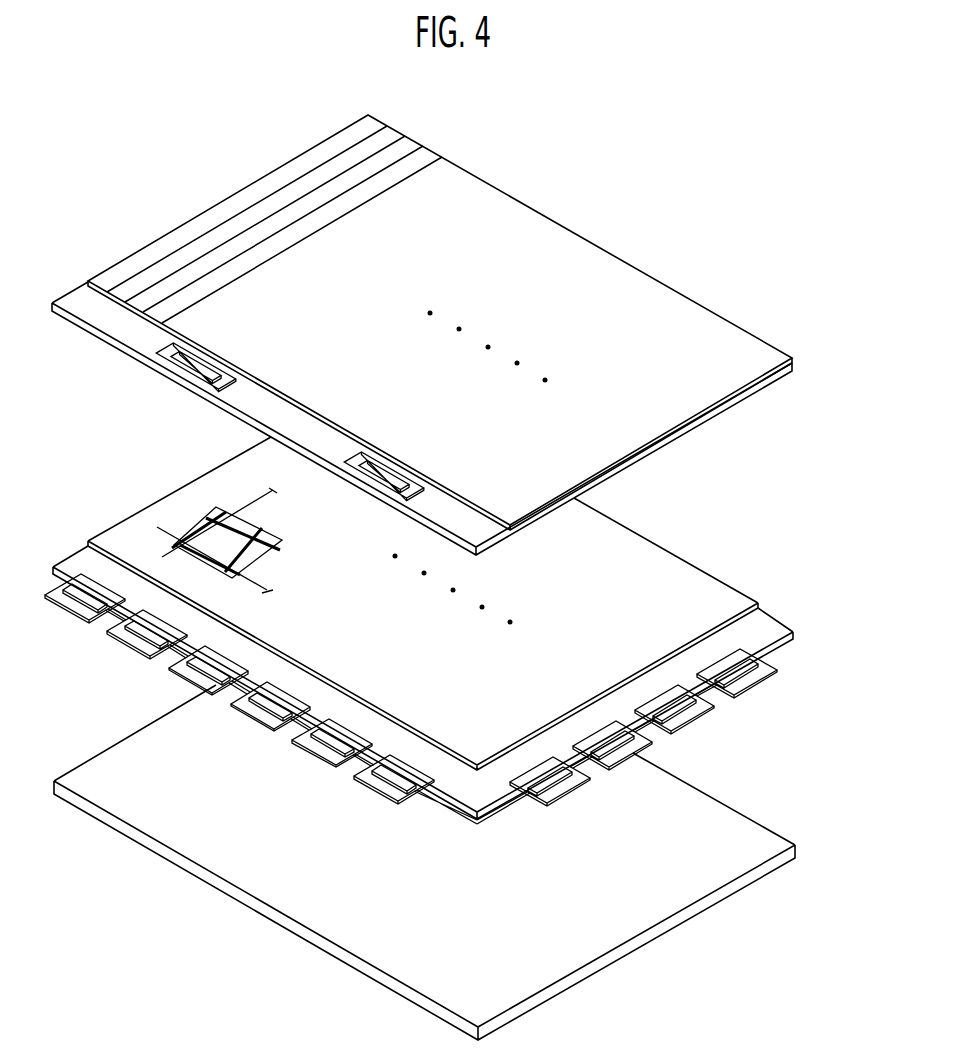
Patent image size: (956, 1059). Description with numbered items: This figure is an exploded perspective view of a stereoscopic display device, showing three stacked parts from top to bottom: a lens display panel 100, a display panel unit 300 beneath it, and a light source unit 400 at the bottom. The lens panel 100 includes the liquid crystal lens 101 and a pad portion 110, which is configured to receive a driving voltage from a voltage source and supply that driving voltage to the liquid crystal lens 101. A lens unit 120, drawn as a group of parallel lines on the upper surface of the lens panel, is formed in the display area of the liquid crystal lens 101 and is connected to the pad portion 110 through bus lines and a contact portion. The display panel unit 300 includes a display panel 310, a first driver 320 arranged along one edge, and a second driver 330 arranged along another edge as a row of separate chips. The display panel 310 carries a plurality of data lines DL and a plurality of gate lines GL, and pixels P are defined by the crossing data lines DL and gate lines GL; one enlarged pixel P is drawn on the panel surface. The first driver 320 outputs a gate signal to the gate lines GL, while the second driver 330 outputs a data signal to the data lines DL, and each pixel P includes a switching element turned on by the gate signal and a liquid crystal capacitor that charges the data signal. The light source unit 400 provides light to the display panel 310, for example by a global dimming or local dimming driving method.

The lens display panel 100 is at (560, 190).
The liquid crystal lens 101 is at (637, 268).
The pad portion 110 is at (176, 366).
The lens unit 120 is at (446, 156).
The display panel unit 300 is at (686, 523).
The display panel 310 is at (738, 586).
The first driver 320 is at (735, 684).
The second driver 330 is at (404, 792).
The light source unit 400 is at (762, 803).
The pixel P is at (212, 538).
The data line DL is at (167, 547).
The gate line GL is at (266, 592).